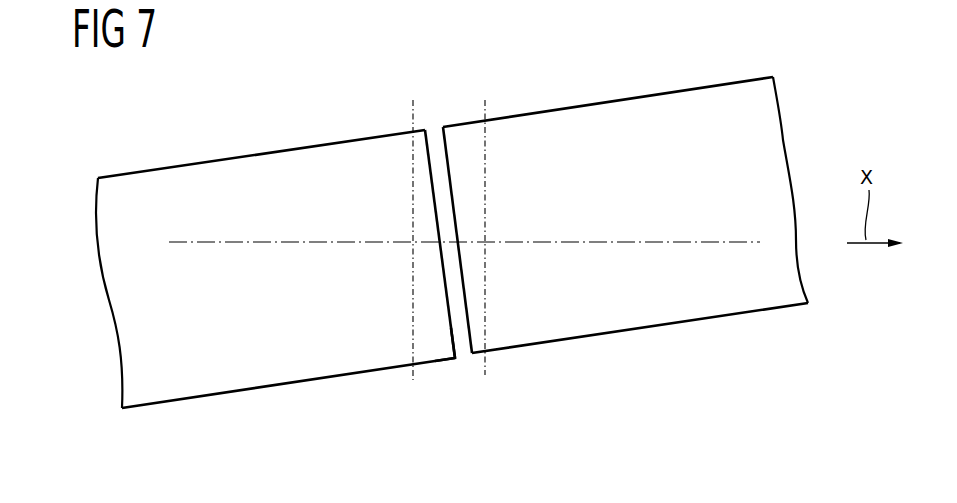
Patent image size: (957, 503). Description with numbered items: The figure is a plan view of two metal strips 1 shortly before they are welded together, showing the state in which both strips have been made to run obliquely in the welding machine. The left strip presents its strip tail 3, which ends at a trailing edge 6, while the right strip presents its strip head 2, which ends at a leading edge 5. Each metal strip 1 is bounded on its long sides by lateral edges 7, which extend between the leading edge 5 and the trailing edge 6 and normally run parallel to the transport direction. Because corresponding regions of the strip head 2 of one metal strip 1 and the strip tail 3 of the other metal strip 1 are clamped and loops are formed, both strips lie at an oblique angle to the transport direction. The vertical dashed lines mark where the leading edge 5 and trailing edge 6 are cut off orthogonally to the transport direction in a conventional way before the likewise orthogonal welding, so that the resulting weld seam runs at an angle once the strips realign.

The metal strip 1 is at (227, 168).
The strip head 2 is at (365, 155).
The strip tail 3 is at (534, 130).
The leading edge 5 is at (452, 330).
The trailing edge 6 is at (467, 287).
The lateral edges 7 is at (300, 145).